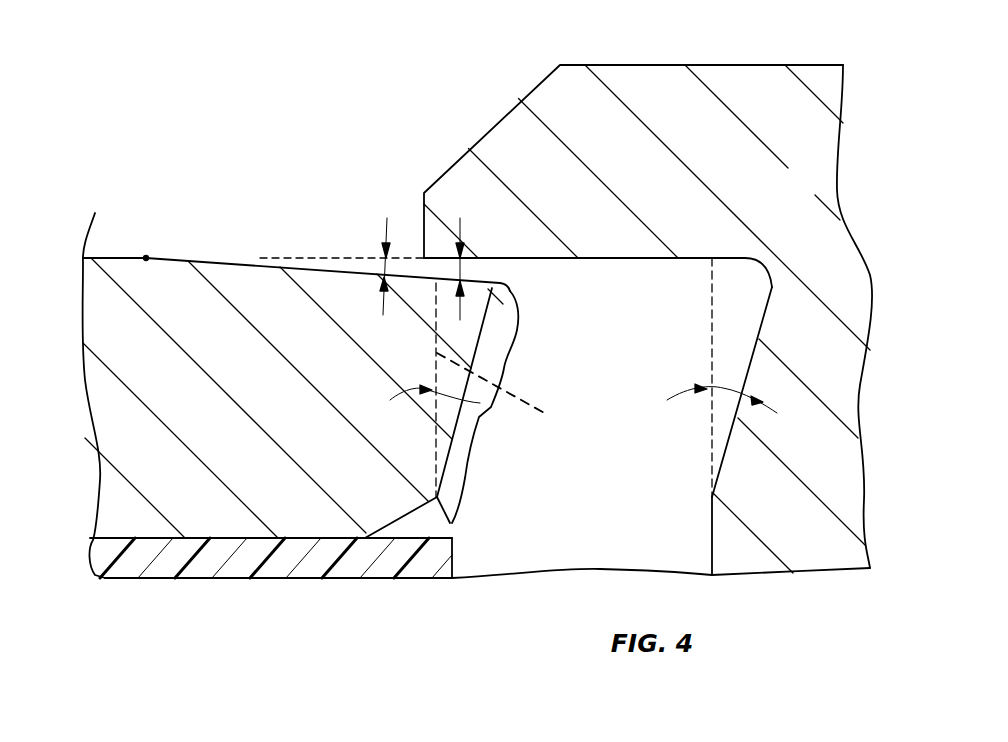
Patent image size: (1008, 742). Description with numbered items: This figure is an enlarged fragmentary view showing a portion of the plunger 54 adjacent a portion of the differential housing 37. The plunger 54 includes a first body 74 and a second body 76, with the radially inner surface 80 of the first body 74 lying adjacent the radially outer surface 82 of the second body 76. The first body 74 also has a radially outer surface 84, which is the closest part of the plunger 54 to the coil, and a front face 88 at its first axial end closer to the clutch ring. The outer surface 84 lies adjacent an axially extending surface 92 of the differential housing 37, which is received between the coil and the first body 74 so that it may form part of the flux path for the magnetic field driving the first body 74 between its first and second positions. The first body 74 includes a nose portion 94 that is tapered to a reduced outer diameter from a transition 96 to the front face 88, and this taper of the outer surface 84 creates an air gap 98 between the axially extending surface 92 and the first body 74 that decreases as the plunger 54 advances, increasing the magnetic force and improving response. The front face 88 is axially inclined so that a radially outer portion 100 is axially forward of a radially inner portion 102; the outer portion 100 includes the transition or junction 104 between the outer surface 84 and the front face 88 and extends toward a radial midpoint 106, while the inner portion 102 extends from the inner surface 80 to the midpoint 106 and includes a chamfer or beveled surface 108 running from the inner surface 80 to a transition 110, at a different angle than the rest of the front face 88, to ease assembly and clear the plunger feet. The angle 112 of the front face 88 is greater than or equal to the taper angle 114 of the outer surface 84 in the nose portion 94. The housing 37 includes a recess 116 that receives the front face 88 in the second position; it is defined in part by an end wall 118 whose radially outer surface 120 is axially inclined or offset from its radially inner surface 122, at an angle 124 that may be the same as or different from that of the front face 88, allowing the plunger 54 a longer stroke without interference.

The differential housing 37 is at (803, 80).
The plunger 54 is at (210, 598).
The first body 74 is at (180, 502).
The second body 76 is at (247, 558).
The radially inner surface 80 is at (337, 538).
The radially outer surface 82 is at (287, 520).
The radially outer surface 84 is at (110, 257).
The front face 88 is at (513, 399).
The axially extending surface 92 is at (628, 268).
The nose portion 94 is at (363, 211).
The transition 96 is at (146, 258).
The air gap 98 is at (462, 270).
The radially outer portion 100 is at (505, 362).
The radially inner portion 102 is at (467, 483).
The transition or junction 104 is at (496, 287).
The radial midpoint 106 is at (460, 420).
The chamfer or beveled surface 108 is at (405, 518).
The transition 110 is at (452, 523).
The angle of the front face 112 is at (448, 390).
The taper angle 114 is at (390, 268).
The recess 116 is at (753, 282).
The end wall 118 is at (757, 352).
The radially outer surface 120 is at (773, 288).
The radially inner surface 122 is at (712, 497).
The angle 124 is at (730, 390).